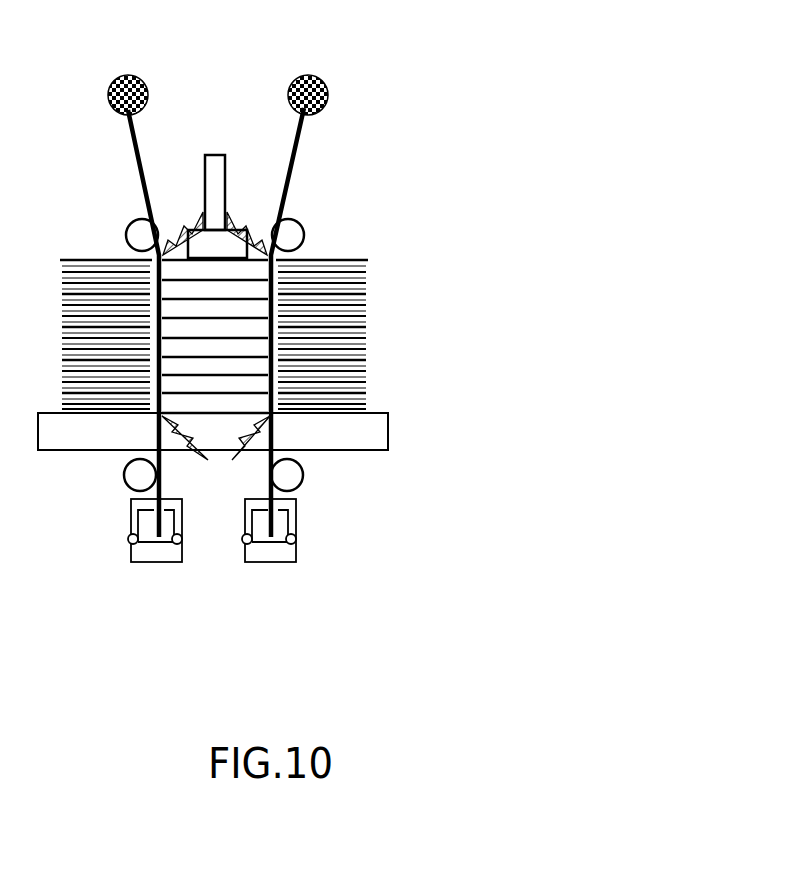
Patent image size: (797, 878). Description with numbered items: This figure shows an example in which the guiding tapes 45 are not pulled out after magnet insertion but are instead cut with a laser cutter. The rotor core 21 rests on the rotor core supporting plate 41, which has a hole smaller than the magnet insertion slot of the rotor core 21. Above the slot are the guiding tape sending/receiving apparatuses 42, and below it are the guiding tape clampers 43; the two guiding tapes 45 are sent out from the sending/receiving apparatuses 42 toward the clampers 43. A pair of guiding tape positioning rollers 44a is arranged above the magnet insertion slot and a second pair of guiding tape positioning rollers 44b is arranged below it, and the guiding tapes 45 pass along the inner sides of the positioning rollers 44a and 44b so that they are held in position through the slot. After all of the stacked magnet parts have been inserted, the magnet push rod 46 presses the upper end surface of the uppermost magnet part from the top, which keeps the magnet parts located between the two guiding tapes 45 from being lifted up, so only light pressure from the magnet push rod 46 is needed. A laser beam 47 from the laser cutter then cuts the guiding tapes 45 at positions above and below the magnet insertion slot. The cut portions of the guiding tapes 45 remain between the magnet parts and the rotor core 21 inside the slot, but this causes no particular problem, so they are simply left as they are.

The rotor core 21 is at (363, 357).
The rotor core supporting plate 41 is at (390, 438).
The guiding tape sending/receiving apparatus 42 is at (328, 90).
The guiding tape clamper 43 is at (296, 553).
The guiding tape positioning rollers 44a is at (304, 233).
The guiding tape positioning rollers 44b is at (303, 482).
The guiding tape 45 is at (288, 172).
The magnet push rod 46 is at (217, 155).
The laser beam 47 is at (190, 200).